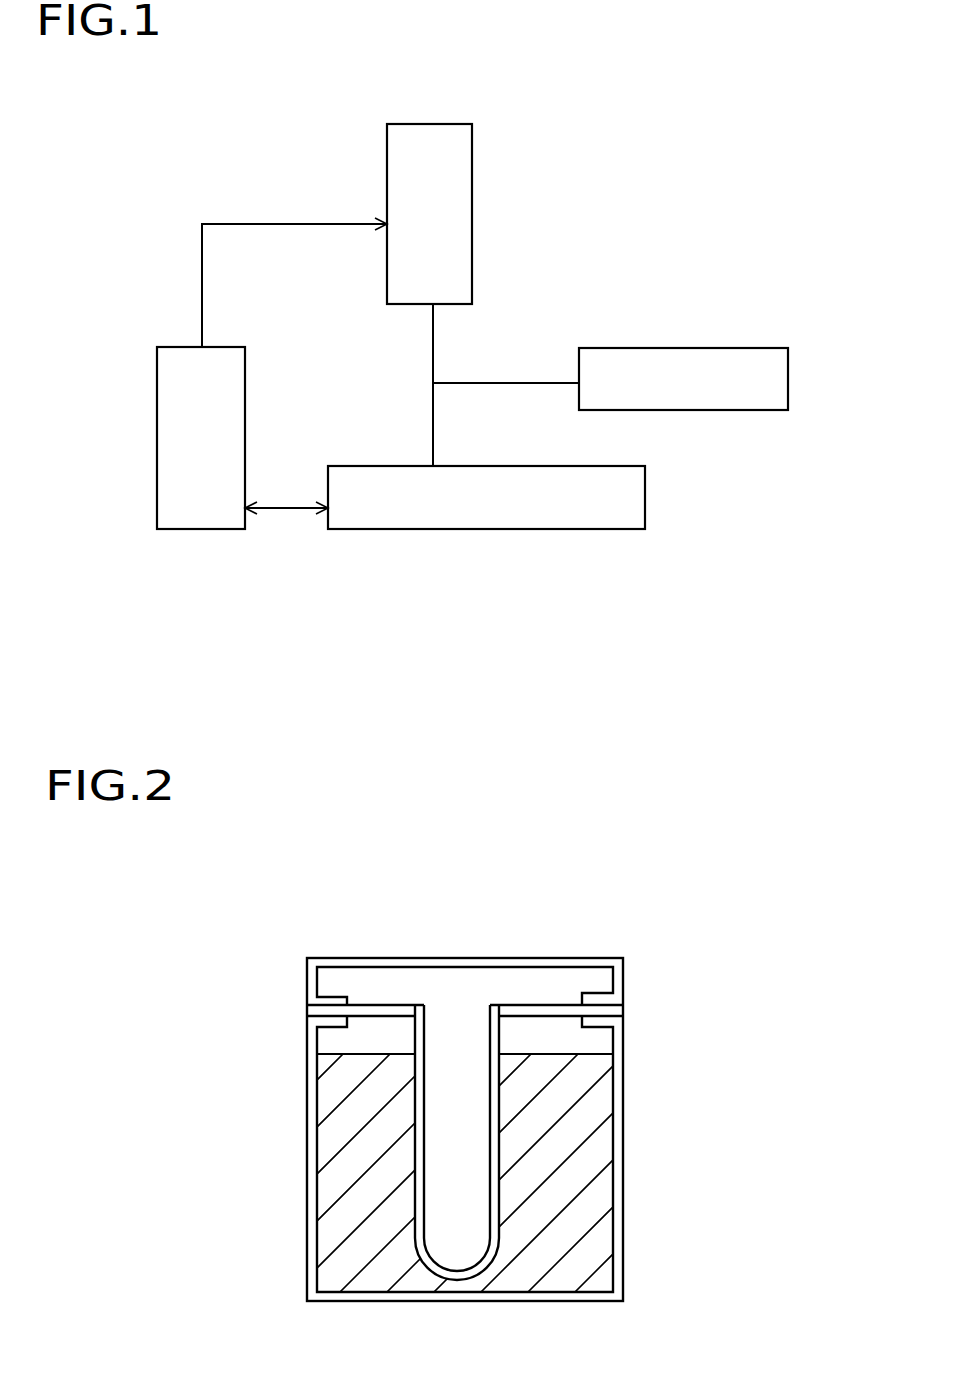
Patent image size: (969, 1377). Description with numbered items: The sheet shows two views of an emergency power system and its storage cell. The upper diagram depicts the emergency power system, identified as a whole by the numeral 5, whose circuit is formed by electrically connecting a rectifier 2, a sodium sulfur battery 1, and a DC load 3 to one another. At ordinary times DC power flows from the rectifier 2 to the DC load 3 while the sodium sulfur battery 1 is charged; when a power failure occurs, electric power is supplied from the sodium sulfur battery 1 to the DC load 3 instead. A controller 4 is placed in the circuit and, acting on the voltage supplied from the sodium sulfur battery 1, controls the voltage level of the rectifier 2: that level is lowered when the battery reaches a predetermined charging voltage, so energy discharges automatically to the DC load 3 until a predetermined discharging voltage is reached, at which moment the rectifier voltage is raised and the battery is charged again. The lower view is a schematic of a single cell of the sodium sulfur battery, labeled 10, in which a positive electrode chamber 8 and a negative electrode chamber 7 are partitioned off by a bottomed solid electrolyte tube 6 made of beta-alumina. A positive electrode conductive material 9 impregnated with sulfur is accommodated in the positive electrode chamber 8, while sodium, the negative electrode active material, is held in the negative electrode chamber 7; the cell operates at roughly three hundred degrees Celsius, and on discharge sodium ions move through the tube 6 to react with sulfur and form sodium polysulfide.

In FIG. 1, the sodium sulfur battery 1 is at (470, 530).
In FIG. 1, the rectifier 2 is at (473, 186).
In FIG. 1, the DC load 3 is at (662, 348).
In FIG. 1, the controller 4 is at (157, 424).
In FIG. 1, the power supply system 5 is at (718, 228).
In FIG. 2, the solid electrolyte tube 6 is at (497, 1153).
In FIG. 2, the negative electrode chamber 7 is at (460, 1095).
In FIG. 2, the positive electrode chamber 8 is at (367, 1037).
In FIG. 2, the positive electrode conductive material 9 is at (365, 1138).
In FIG. 2, the sodium sulfur battery cell 10 is at (668, 1000).